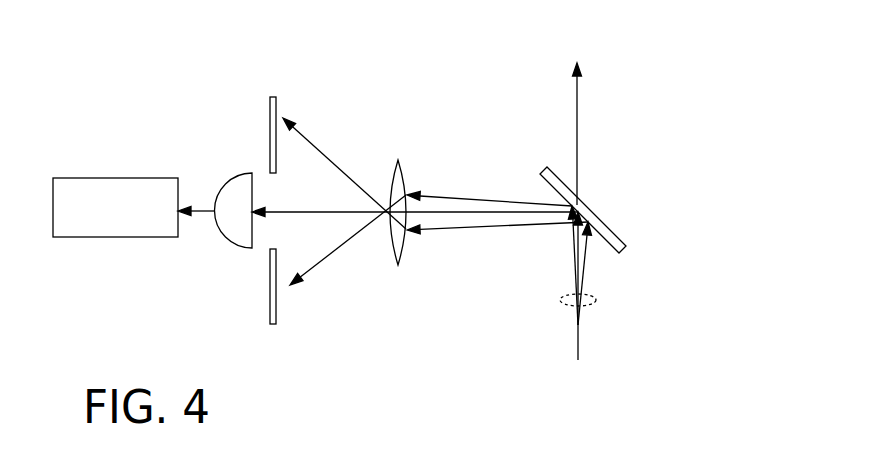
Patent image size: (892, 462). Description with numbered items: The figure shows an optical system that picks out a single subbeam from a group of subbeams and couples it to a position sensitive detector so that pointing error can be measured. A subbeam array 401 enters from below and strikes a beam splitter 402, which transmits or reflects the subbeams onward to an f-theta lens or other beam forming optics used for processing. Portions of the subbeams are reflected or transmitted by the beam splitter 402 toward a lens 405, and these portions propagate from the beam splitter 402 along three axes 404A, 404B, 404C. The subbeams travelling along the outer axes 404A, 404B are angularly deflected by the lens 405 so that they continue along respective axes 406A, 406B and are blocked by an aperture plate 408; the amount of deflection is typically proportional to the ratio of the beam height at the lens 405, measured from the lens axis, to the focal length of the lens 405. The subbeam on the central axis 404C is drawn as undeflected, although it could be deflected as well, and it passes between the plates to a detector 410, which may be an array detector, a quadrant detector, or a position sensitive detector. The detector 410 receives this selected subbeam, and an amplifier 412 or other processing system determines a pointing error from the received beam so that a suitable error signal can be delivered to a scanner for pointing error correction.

The subbeam array 401 is at (597, 302).
The beam splitter 402 is at (623, 250).
The axis 404A is at (467, 197).
The axis 404B is at (470, 227).
The axis 404C is at (343, 213).
The lens 405 is at (398, 160).
The axis 406A is at (327, 260).
The axis 406B is at (317, 145).
The aperture plate 408 is at (273, 135).
The detector 410 is at (252, 248).
The amplifier 412 is at (134, 207).